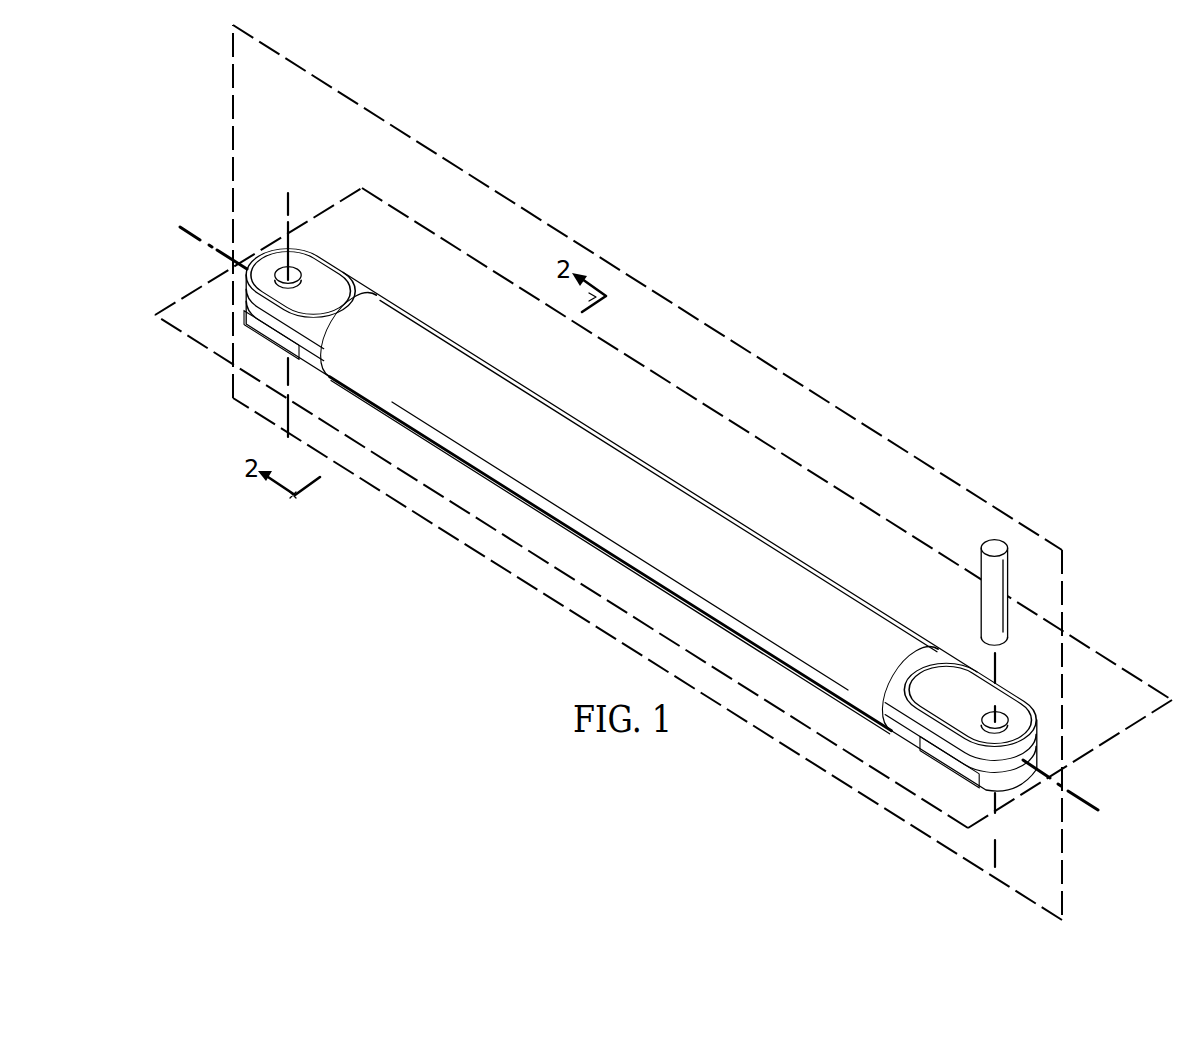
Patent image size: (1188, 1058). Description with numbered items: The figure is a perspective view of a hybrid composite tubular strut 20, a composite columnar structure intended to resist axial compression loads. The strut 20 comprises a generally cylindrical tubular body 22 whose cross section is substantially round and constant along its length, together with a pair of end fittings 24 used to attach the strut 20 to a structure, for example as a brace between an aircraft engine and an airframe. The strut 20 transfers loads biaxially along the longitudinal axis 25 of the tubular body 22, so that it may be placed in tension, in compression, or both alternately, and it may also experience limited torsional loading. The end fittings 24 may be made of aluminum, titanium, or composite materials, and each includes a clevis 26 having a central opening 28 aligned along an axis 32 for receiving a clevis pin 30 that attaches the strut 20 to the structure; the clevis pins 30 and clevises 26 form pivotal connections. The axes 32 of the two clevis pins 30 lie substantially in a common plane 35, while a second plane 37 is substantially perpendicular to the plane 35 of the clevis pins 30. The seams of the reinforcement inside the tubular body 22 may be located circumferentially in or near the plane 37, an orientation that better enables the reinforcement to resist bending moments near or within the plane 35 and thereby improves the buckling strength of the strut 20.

The strut 20 is at (672, 490).
The tubular body 22 is at (716, 496).
The end fittings 24 is at (672, 490).
The longitudinal axis 25 is at (178, 233).
The clevis 26 is at (279, 258).
The central opening 28 is at (293, 262).
The clevis pin 30 is at (978, 560).
The axis 32 is at (291, 204).
The plane 35 is at (679, 306).
The plane 37 is at (180, 333).